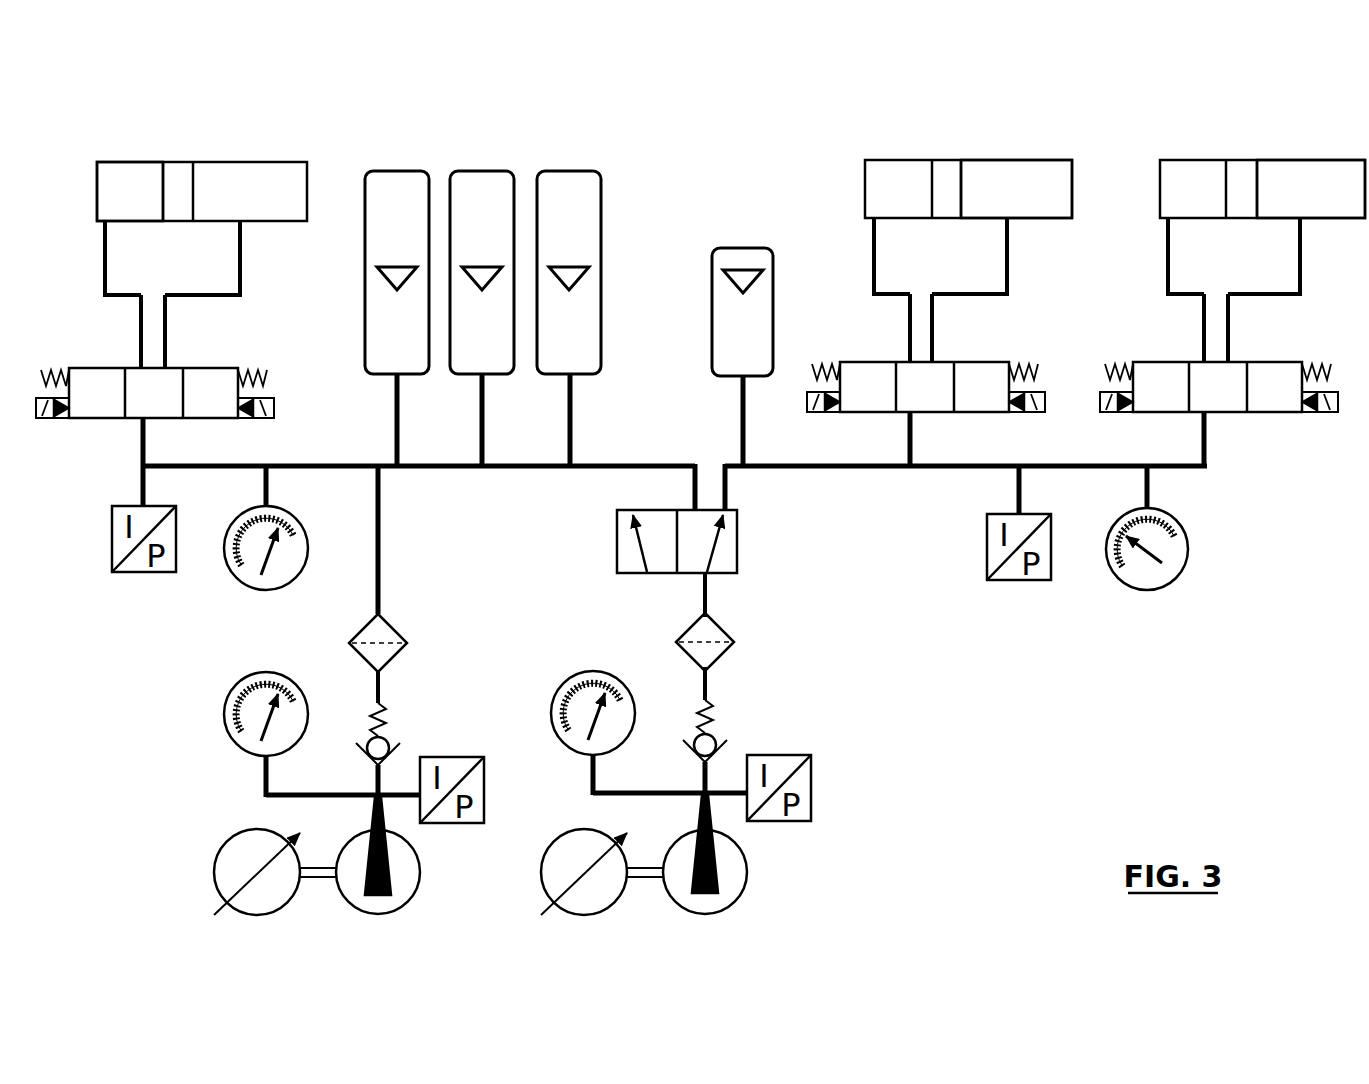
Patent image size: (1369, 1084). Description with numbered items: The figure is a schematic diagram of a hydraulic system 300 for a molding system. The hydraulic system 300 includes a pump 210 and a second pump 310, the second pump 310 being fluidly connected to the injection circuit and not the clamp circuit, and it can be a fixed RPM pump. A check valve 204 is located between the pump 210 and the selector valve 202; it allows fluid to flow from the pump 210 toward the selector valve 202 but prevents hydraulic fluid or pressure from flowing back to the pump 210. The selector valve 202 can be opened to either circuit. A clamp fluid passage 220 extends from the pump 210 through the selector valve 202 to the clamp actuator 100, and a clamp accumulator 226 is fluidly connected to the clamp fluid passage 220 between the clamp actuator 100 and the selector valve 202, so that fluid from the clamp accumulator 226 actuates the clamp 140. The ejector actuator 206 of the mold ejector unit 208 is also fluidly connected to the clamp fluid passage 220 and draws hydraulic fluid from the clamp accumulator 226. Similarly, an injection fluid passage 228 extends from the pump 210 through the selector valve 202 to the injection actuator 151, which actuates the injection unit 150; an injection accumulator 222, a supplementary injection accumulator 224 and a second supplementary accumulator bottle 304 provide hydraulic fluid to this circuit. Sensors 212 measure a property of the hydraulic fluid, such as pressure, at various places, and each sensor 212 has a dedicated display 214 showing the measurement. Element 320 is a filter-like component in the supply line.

The clamp actuator 100 is at (887, 158).
The clamp 140 is at (983, 158).
The injection unit 150 is at (238, 160).
The injection actuator 151 is at (143, 160).
The selector valve 202 is at (737, 548).
The check valve 204 is at (723, 725).
The ejector actuator 206 is at (1163, 158).
The mold ejector unit 208 is at (1248, 158).
The pump 210 is at (747, 880).
The sensor 212 is at (126, 573).
The display 214 is at (264, 585).
The clamp fluid passage 220 is at (1207, 467).
The injection accumulator 222 is at (404, 170).
The supplementary injection accumulator 224 is at (485, 170).
The clamp accumulator 226 is at (750, 248).
The injection fluid passage 228 is at (141, 453).
The hydraulic system 300 is at (155, 735).
The second supplementary accumulator bottle 304 is at (568, 170).
The second pump 310 is at (423, 877).
The filter 320 is at (733, 640).